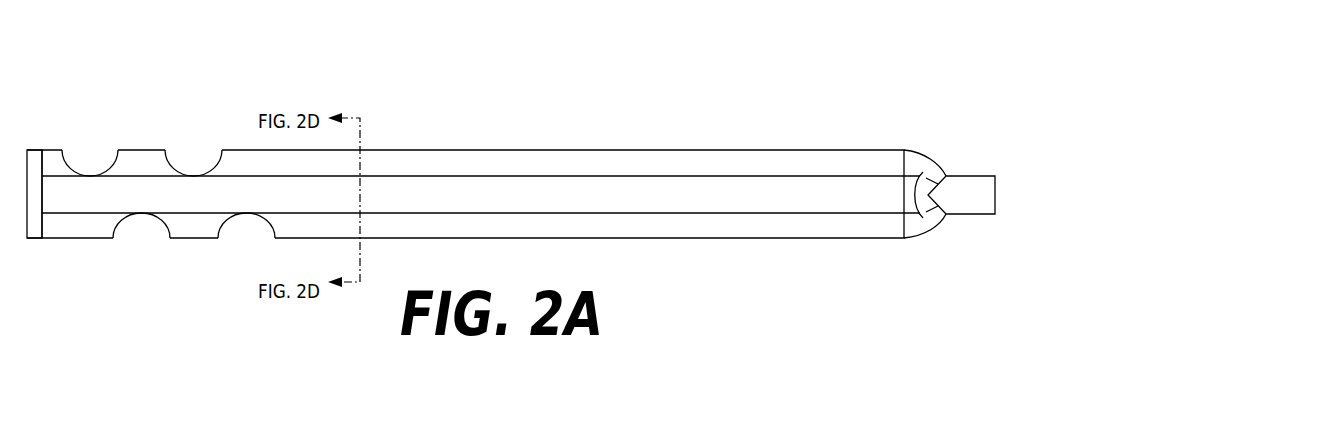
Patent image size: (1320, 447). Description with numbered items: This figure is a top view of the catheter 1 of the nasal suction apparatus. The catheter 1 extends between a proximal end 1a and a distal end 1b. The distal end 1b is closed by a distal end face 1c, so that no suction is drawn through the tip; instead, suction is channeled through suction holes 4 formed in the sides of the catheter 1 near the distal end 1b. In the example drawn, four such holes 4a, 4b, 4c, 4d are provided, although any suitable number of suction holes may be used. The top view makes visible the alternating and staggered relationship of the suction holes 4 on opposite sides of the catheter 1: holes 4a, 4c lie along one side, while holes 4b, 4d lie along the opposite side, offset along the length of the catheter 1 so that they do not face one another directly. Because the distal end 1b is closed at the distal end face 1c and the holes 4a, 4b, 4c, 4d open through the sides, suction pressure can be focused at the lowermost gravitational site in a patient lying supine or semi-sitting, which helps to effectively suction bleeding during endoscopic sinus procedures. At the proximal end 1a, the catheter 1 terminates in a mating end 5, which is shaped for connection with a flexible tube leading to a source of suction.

The catheter 1 is at (632, 93).
The proximal end 1a is at (899, 256).
The distal end 1b is at (41, 252).
The distal end face 1c is at (33, 148).
The suction holes 4 is at (132, 79).
The suction hole 4a is at (257, 215).
The suction hole 4b is at (185, 175).
The suction hole 4c is at (157, 215).
The suction hole 4d is at (91, 175).
The mating end 5 is at (967, 173).